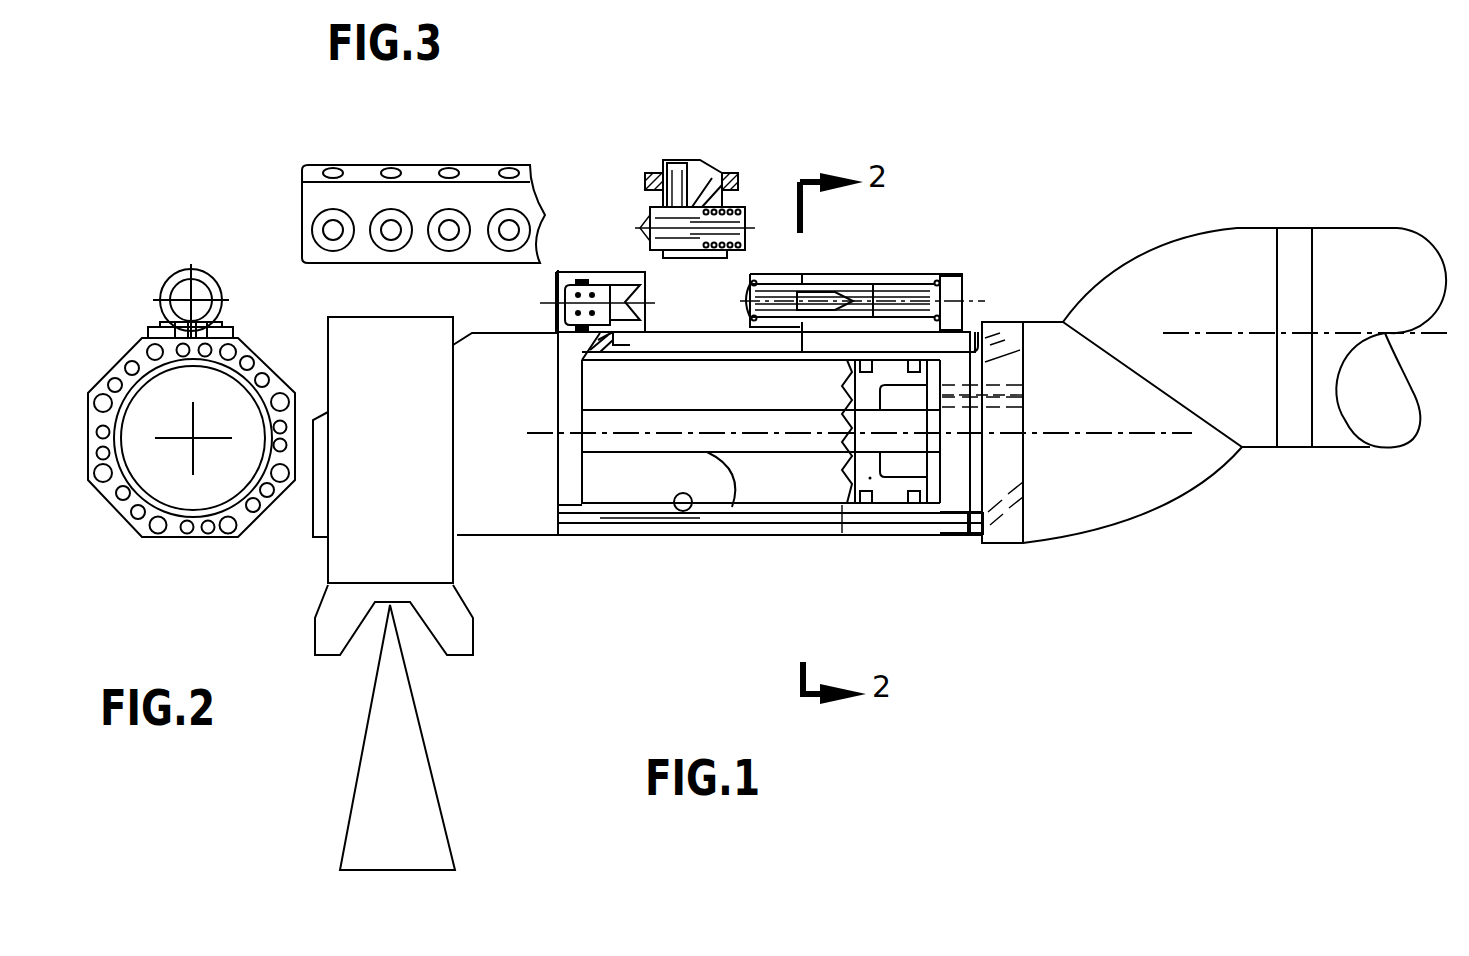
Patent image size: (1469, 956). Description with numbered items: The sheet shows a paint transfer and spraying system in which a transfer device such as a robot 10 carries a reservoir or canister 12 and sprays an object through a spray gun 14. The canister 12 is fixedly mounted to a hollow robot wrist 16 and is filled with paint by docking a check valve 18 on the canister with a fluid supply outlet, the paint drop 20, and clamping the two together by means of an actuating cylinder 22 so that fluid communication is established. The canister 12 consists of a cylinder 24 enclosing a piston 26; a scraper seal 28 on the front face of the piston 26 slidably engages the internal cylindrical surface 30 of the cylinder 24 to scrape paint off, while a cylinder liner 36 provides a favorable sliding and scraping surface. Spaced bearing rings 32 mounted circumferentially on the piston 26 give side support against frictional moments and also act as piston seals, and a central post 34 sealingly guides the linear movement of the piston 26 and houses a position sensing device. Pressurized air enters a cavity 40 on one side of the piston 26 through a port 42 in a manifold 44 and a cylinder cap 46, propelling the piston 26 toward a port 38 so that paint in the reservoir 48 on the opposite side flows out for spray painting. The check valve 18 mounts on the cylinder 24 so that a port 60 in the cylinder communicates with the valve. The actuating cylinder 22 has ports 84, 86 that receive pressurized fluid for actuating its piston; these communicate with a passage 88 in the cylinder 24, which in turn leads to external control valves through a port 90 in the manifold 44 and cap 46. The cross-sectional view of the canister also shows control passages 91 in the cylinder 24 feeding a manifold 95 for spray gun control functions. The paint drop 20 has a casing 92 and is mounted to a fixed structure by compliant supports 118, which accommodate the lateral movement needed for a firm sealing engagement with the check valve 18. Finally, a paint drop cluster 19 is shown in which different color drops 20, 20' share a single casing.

In FIG. 1, the robot 10 is at (1113, 556).
In FIG. 1, the canister 12 is at (758, 552).
In FIG. 2, the canister 12 is at (212, 562).
In FIG. 1, the spray gun 14 is at (318, 560).
In FIG. 1, the robot wrist 16 is at (1118, 262).
In FIG. 1, the check valve 18 is at (583, 260).
In FIG. 3, the paint drop cluster 19 is at (398, 160).
In FIG. 1, the paint drop 20 is at (703, 161).
In FIG. 3, the paint drop 20 is at (413, 140).
In FIG. 3, the paint drop 20' is at (536, 140).
In FIG. 1, the actuating cylinder 22 is at (895, 262).
In FIG. 2, the actuating cylinder 22 is at (171, 262).
In FIG. 1, the cylinder 24 is at (842, 560).
In FIG. 1, the piston 26 is at (887, 493).
In FIG. 1, the scraper seal 28 is at (843, 480).
In FIG. 1, the internal cylindrical surface 30 is at (687, 508).
In FIG. 1, the bearing rings 32 is at (898, 492).
In FIG. 1, the central post 34 is at (732, 507).
In FIG. 1, the cylinder liner 36 is at (612, 505).
In FIG. 2, the cylinder liner 36 is at (150, 512).
In FIG. 1, the port 38 is at (590, 487).
In FIG. 1, the cavity 40 is at (943, 497).
In FIG. 1, the port 42 is at (1023, 400).
In FIG. 1, the manifold 44 is at (1003, 543).
In FIG. 1, the cylinder cap 46 is at (972, 527).
In FIG. 1, the reservoir 48 is at (597, 392).
In FIG. 2, the reservoir 48 is at (145, 468).
In FIG. 1, the port 60 is at (598, 345).
In FIG. 2, the port 84 is at (205, 332).
In FIG. 2, the port 86 is at (163, 322).
In FIG. 1, the passage 88 is at (818, 347).
In FIG. 2, the passage 88 is at (140, 354).
In FIG. 1, the port 90 is at (1003, 350).
In FIG. 1, the control passages 91 is at (642, 522).
In FIG. 2, the control passages 91 is at (188, 535).
In FIG. 1, the casing 92 is at (705, 250).
In FIG. 1, the manifold 95 is at (478, 540).
In FIG. 1, the supports 118 is at (740, 177).